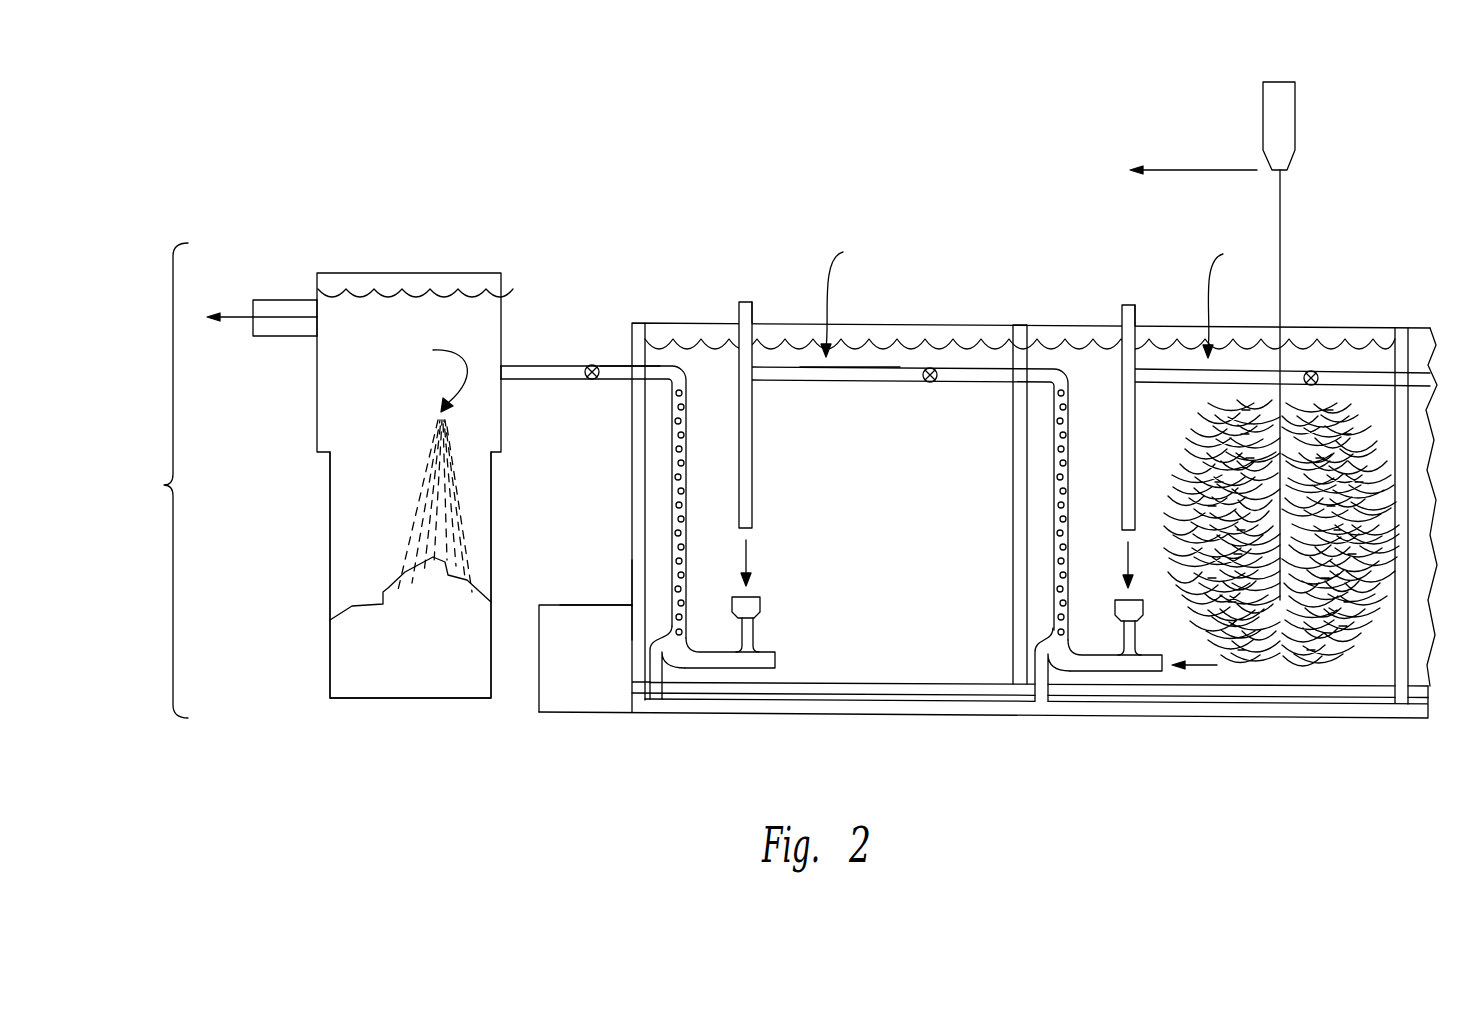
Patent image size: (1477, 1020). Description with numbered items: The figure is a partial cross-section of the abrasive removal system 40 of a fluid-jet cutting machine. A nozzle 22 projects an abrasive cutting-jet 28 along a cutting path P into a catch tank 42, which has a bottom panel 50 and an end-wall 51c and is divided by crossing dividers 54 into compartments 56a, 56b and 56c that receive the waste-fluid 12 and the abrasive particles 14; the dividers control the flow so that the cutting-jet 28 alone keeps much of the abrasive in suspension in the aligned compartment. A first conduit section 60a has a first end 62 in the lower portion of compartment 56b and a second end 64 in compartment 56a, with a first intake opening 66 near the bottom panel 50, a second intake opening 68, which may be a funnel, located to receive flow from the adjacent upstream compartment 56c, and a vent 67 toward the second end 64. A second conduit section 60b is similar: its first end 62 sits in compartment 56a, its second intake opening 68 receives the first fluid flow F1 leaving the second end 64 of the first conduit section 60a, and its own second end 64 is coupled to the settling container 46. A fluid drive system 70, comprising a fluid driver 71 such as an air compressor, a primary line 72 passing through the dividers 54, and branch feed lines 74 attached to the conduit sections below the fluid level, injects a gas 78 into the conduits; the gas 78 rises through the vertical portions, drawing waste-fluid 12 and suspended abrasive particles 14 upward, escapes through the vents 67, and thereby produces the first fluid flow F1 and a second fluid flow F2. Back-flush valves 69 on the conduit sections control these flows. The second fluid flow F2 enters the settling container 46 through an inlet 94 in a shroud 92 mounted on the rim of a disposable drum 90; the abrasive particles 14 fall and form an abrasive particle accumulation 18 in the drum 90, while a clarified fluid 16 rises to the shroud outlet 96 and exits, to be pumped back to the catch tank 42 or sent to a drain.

The abrasive removal system 40 is at (156, 480).
The settling container 46 is at (303, 493).
The shroud 92 is at (397, 273).
The shroud outlet 96 is at (318, 300).
The clarified fluid 16 is at (243, 312).
The shroud inlet 94 is at (500, 366).
The second fluid flow F2 is at (437, 372).
The abrasive particles 14 is at (404, 508).
The abrasive particle accumulation 18 is at (360, 609).
The disposable drum 90 is at (330, 600).
The second end 64 is at (515, 381).
The second conduit section 60b is at (608, 366).
The first conduit section 60a is at (840, 383).
The back-flush valve 69 is at (590, 366).
The catch tank 42 is at (618, 450).
The first end-wall 51c is at (630, 580).
The crossing dividers 54 is at (1022, 325).
The compartment 56c is at (1432, 462).
The waste-fluid 12 is at (715, 345).
The vent 67 is at (753, 310).
The compartment 56a is at (849, 295).
The compartment 56b is at (1230, 297).
The gas 78 is at (675, 518).
The branch feed lines 74 is at (656, 700).
The first intake opening 66 is at (780, 668).
The first end 62 is at (717, 632).
The second intake opening 68 is at (732, 607).
The first fluid flow F1 is at (750, 555).
The bottom panel 50 is at (920, 714).
The primary line 72 is at (845, 701).
The fluid drive system 70 is at (533, 720).
The fluid driver 71 is at (563, 605).
The nozzle 22 is at (1296, 110).
The abrasive cutting-jet 28 is at (1282, 235).
The cutting path P is at (1179, 173).